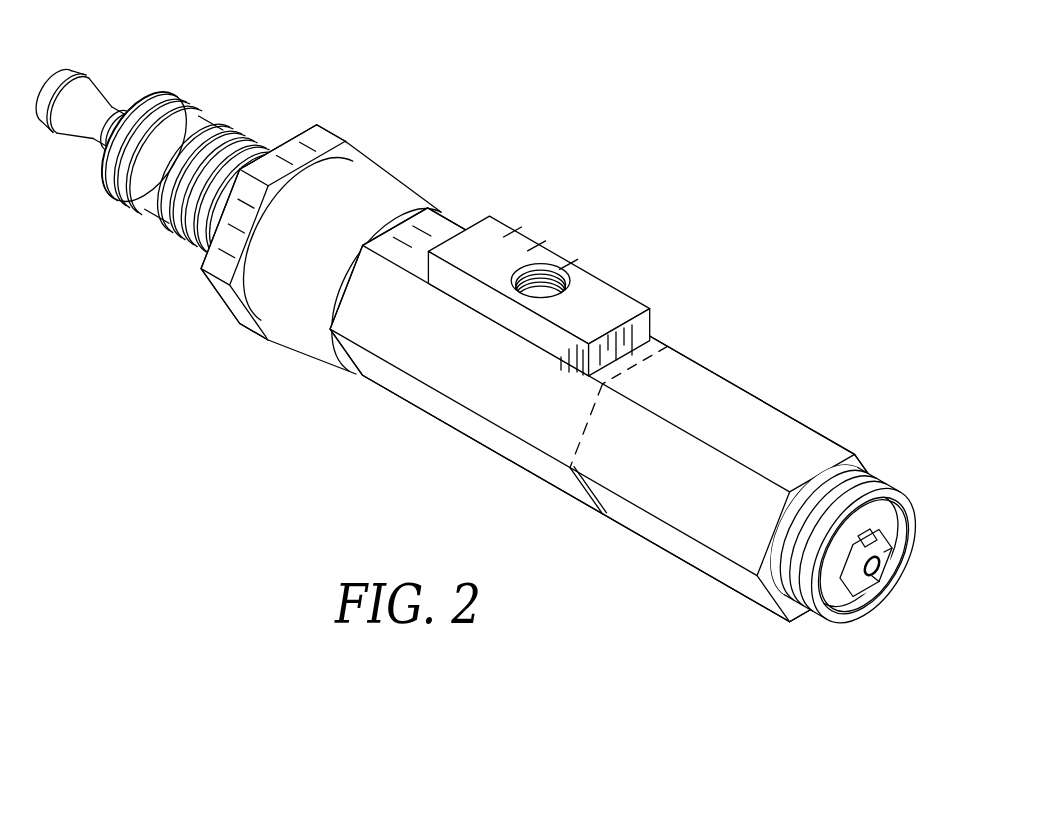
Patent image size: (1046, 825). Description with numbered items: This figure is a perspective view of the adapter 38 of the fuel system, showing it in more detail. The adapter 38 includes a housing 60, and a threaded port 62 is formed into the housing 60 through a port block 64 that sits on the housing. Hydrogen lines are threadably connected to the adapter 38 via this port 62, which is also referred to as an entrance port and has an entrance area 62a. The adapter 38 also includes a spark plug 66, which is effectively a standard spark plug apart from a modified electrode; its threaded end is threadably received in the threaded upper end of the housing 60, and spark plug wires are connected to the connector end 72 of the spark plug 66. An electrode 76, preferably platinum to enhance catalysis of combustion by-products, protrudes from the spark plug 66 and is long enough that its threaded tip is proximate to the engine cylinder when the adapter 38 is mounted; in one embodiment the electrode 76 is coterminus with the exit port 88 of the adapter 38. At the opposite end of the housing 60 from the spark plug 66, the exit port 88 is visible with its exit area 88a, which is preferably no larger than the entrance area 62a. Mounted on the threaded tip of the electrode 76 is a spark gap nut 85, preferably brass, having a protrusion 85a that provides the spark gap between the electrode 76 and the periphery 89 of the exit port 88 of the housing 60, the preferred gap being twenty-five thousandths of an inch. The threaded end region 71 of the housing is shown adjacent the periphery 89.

The adapter 38 is at (486, 376).
The housing 60 is at (722, 405).
The threaded port 62 is at (566, 242).
The entrance area 62a is at (540, 292).
The port block 64 is at (559, 272).
The spark plug 66 is at (203, 116).
The threaded outlet end 71 is at (854, 527).
The connector end 72 is at (59, 82).
The electrode 76 is at (864, 578).
The spark gap nut 85 is at (841, 607).
The protrusion 85a is at (884, 566).
The exit port 88 is at (861, 641).
The exit area 88a is at (872, 578).
The periphery 89 is at (897, 530).